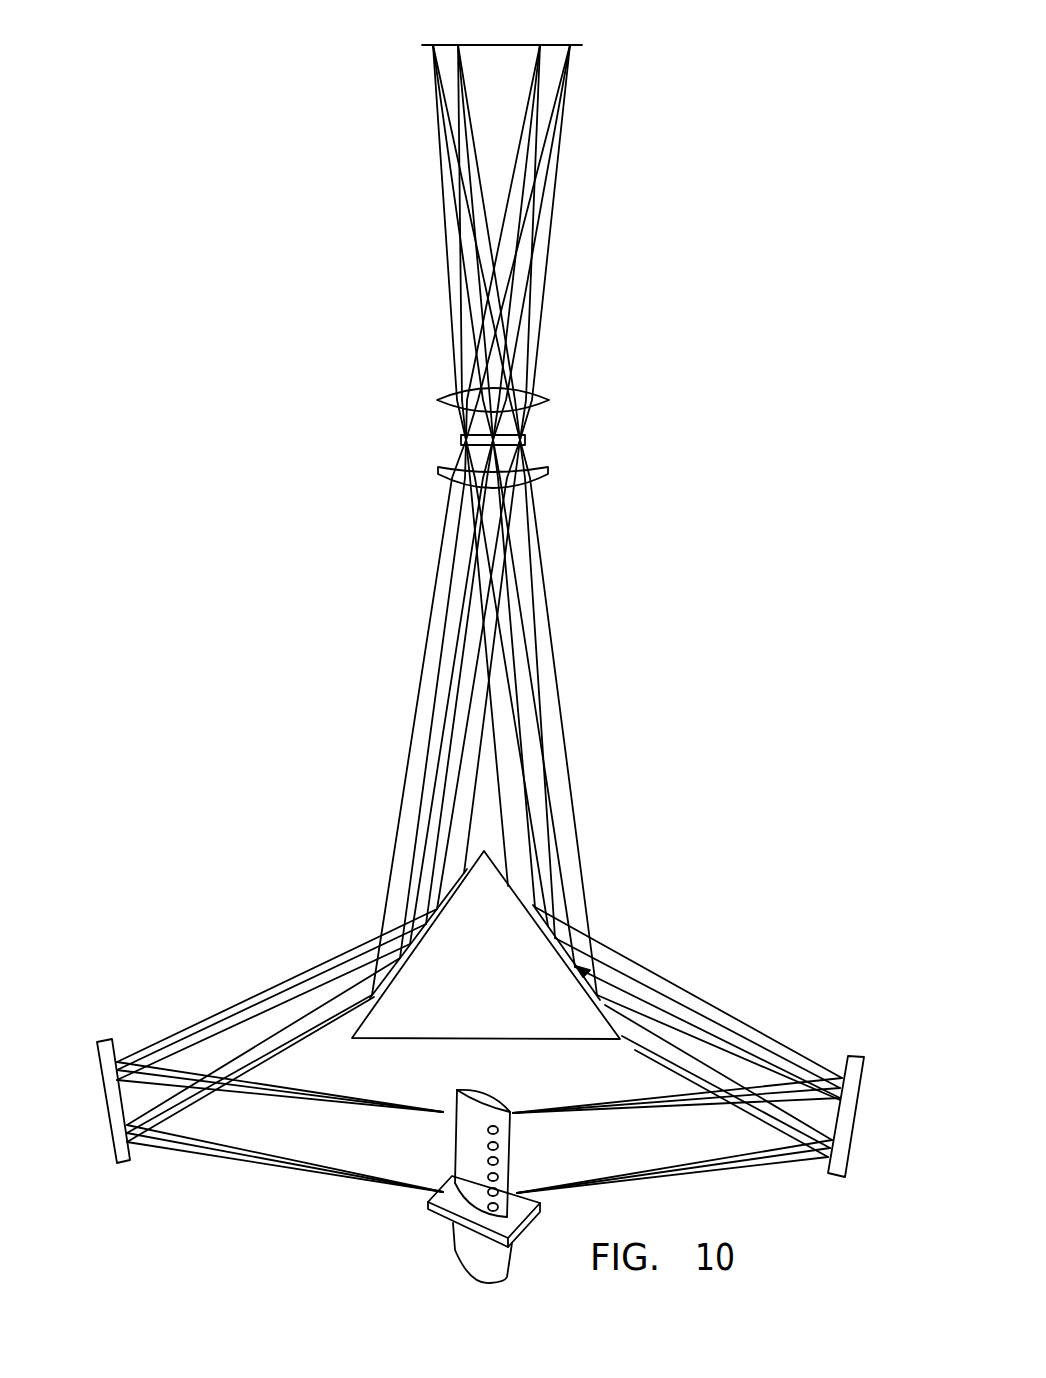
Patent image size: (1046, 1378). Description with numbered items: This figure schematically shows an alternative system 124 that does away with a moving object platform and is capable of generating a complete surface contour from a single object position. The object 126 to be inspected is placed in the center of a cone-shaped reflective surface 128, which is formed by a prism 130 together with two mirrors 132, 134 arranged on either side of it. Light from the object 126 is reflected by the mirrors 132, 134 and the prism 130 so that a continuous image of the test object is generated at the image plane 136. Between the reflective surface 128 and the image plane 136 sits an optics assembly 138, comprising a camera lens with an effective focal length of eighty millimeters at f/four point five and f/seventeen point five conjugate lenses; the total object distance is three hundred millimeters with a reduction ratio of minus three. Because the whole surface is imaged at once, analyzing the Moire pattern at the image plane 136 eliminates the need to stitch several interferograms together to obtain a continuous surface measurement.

The alternative system 124 is at (338, 498).
The object 126 is at (470, 1247).
The cone-shaped reflective surface 128 is at (743, 996).
The prism 130 is at (421, 1040).
The mirror 132 is at (850, 1136).
The mirror 134 is at (104, 1095).
The image plane 136 is at (576, 44).
The optics assembly 138 is at (572, 446).